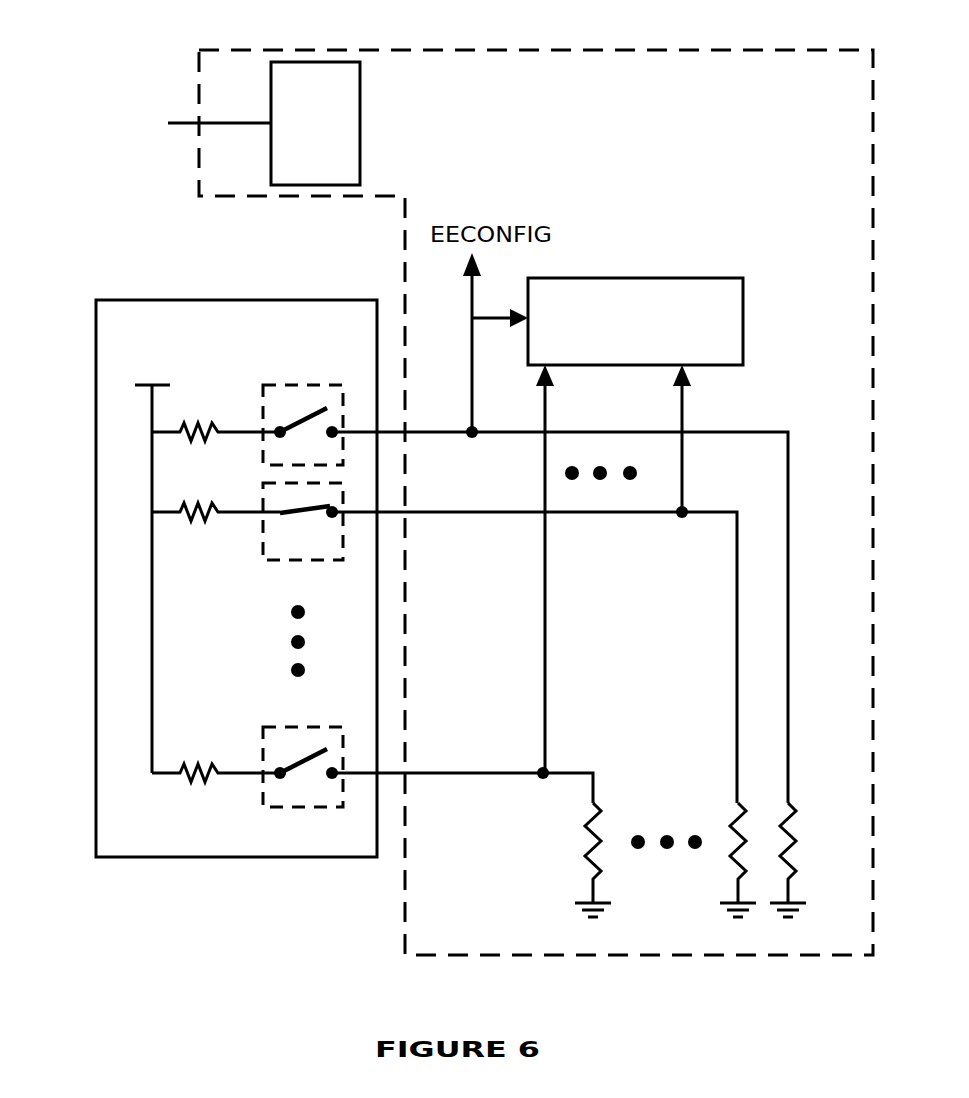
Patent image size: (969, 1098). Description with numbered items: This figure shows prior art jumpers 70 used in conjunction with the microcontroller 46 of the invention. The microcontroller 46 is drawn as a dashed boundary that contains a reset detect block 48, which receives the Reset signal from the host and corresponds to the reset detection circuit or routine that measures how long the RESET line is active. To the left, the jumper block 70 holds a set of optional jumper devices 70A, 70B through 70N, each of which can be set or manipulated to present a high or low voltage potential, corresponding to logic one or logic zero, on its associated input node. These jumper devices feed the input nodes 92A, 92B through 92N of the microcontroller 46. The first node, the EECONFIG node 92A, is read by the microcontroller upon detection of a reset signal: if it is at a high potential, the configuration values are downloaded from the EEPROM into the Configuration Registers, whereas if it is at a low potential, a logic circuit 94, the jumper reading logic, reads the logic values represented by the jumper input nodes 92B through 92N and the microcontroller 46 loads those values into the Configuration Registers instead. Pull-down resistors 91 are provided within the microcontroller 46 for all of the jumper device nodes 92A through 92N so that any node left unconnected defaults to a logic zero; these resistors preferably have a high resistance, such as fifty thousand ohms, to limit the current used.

The microcontroller 46 is at (838, 48).
The reset detect circuit 48 is at (360, 135).
The jumpers 70 is at (170, 300).
The jumper device 70A is at (263, 397).
The jumper device 70B is at (263, 498).
The jumper device 70N is at (263, 735).
The pull-down resistors 91 is at (798, 830).
The EECONFIG node 92A is at (770, 432).
The input node 92B is at (700, 512).
The input node 92N is at (565, 778).
The logic circuit 94 is at (744, 300).